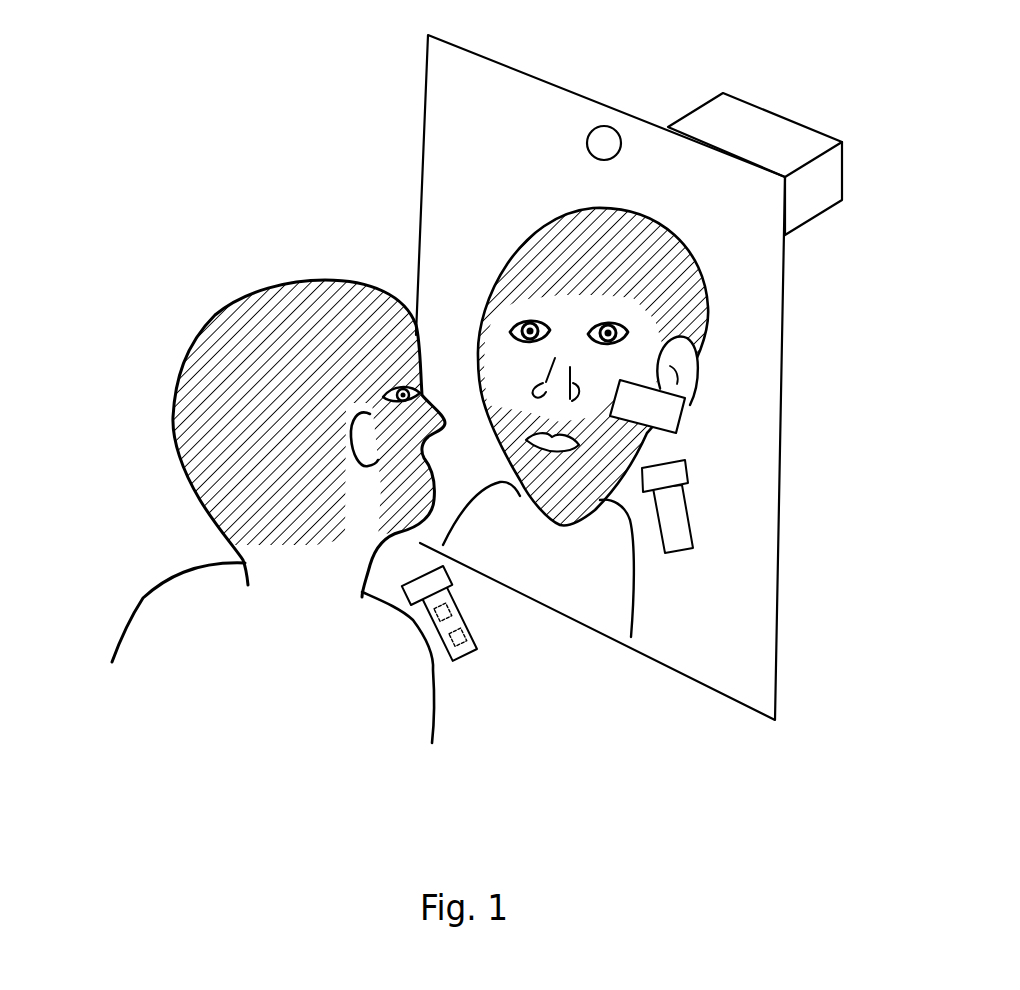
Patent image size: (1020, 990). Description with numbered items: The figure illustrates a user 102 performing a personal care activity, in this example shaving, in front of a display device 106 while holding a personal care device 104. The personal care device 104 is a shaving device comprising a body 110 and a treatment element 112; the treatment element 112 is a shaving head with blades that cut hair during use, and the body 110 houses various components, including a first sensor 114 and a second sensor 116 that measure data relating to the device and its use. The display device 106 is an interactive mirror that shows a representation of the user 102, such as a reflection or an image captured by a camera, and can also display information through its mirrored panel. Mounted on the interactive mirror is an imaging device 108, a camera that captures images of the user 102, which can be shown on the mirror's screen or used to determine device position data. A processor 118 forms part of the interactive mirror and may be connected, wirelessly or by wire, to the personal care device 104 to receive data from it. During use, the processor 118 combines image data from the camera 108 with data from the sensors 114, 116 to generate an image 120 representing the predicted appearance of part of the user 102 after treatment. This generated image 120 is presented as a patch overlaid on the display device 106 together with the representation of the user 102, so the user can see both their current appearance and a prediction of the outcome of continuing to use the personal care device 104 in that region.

The user 102 is at (143, 598).
The personal care device 104 is at (455, 663).
The display device 106 is at (750, 305).
The imaging device 108 is at (607, 127).
The body 110 is at (442, 638).
The treatment element 112 is at (408, 600).
The first sensor 114 is at (450, 612).
The second sensor 116 is at (476, 646).
The processor 118 is at (772, 112).
The image 120 is at (680, 413).